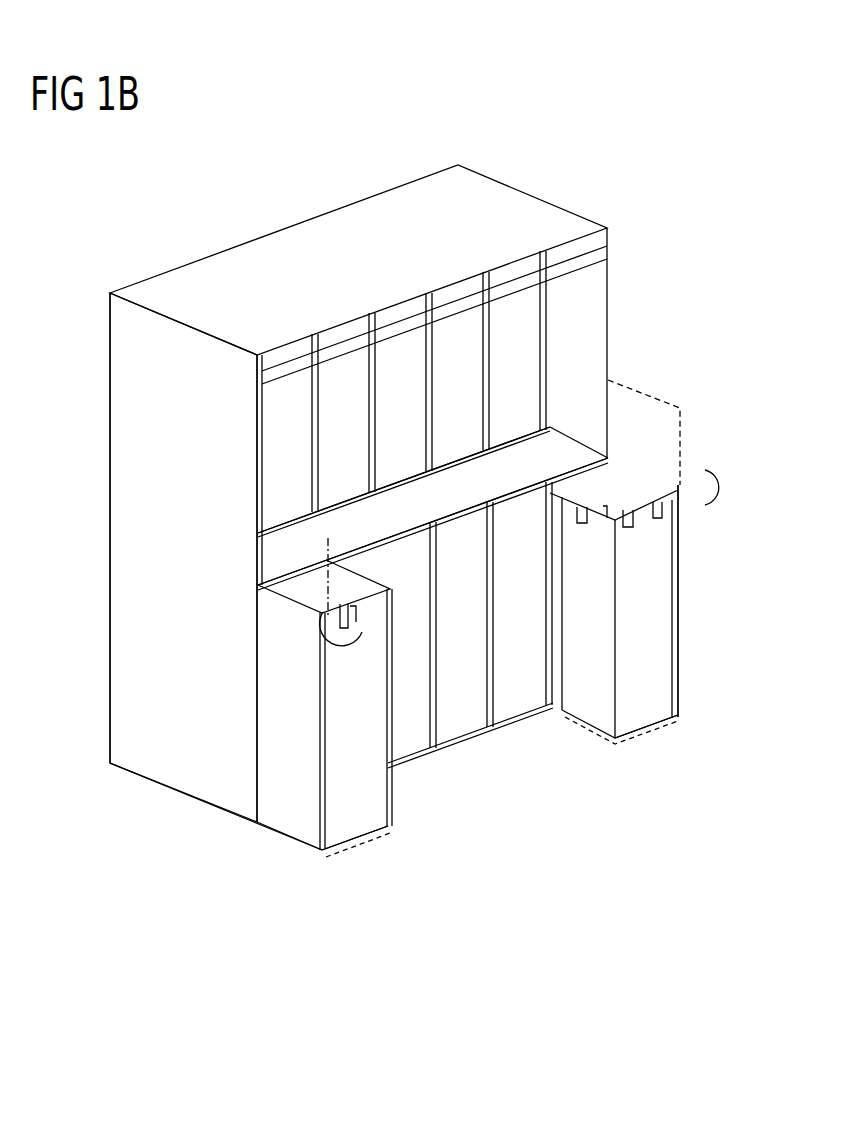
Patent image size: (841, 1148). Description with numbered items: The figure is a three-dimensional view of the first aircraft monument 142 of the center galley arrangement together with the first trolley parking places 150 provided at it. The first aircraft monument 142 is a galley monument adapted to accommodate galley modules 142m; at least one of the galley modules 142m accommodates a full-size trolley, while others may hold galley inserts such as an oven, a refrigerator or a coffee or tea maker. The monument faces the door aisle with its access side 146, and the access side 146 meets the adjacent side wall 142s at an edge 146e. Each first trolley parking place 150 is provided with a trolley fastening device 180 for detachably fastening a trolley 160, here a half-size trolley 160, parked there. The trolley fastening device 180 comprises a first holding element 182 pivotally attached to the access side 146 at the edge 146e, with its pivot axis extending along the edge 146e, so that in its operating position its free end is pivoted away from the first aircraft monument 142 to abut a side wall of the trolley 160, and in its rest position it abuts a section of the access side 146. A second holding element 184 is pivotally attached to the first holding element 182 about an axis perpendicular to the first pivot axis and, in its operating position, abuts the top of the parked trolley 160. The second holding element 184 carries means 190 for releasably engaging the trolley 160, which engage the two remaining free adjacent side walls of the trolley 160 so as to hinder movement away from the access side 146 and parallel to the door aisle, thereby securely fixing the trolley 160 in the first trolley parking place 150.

The first aircraft monument 142 is at (280, 222).
The side wall 142s is at (118, 560).
The galley module 142m is at (510, 270).
The access side 146 is at (519, 812).
The edge 146e is at (245, 490).
The first trolley parking place 150 is at (356, 858).
The trolley 160 is at (372, 836).
The trolley fastening device 180 is at (745, 600).
The first holding element 182 is at (702, 530).
The second holding element 184 is at (661, 471).
The means for releasably engaging the trolley 190 is at (617, 517).